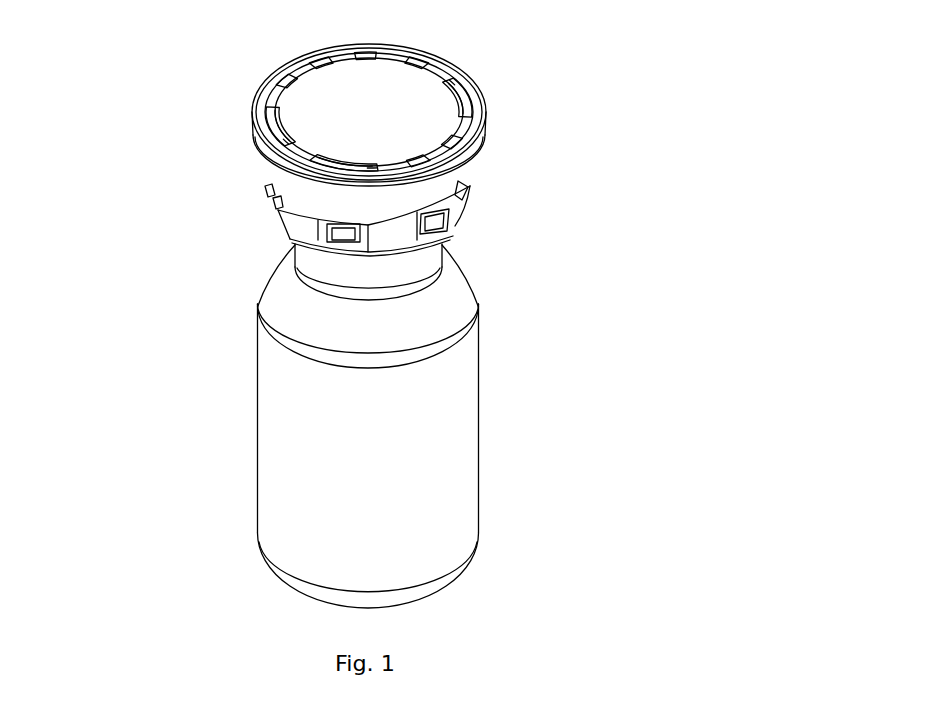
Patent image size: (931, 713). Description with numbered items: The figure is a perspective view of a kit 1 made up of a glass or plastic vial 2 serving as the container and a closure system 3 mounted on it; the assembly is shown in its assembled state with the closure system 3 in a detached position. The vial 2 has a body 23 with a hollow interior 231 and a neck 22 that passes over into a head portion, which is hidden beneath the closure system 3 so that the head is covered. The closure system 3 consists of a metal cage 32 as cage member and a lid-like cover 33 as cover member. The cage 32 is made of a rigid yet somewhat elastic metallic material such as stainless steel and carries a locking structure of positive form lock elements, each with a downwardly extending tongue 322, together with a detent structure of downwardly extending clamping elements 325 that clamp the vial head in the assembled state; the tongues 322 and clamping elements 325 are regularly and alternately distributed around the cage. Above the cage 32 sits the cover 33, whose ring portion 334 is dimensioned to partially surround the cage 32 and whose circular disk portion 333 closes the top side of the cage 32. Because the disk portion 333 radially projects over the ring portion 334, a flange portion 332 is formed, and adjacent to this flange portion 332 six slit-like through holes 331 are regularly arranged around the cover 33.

The kit 1 is at (188, 452).
The vial 2 is at (213, 367).
The neck 22 is at (418, 262).
The body 23 is at (428, 501).
The hollow interior 231 is at (384, 554).
The closure system 3 is at (513, 193).
The cage 32 is at (250, 208).
The tongue 322 is at (292, 222).
The clamping element 325 is at (437, 223).
The cover 33 is at (513, 120).
The slit-like through hole 331 is at (299, 75).
The flange portion 332 is at (255, 125).
The disk portion 333 is at (402, 85).
The ring portion 334 is at (456, 176).